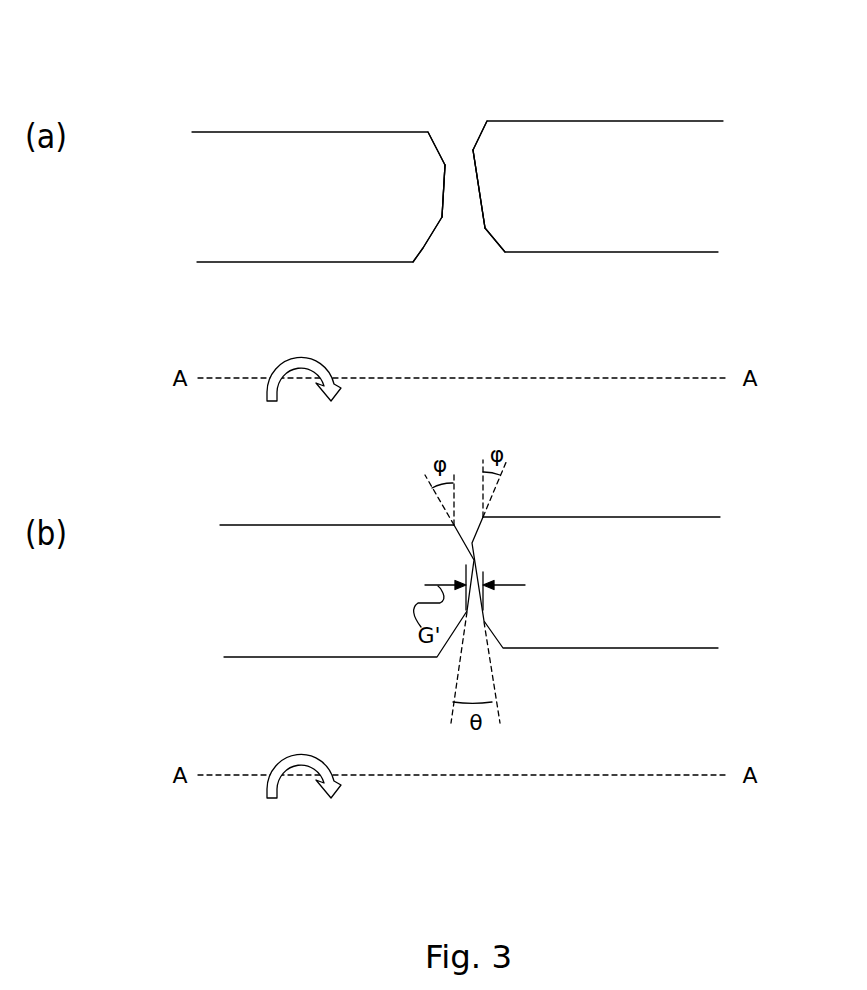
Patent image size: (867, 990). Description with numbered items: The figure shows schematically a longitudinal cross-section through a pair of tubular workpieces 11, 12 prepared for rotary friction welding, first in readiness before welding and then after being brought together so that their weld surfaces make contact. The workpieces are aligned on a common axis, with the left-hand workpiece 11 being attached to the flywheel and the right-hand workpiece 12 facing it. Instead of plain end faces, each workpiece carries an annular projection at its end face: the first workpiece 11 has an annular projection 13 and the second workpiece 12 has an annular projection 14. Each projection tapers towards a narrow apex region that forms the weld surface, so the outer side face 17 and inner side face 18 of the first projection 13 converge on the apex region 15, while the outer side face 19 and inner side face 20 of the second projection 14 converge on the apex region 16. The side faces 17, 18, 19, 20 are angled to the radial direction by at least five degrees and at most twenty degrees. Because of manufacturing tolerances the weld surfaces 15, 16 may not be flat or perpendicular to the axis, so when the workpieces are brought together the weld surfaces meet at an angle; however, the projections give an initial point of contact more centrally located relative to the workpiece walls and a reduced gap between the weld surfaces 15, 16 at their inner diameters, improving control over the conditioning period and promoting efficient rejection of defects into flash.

The tubular workpiece 11 is at (297, 211).
The tubular workpiece 12 is at (617, 199).
The annular projection 13 is at (435, 190).
The annular projection 14 is at (483, 188).
The apex region 15 is at (444, 196).
The apex region 16 is at (481, 203).
The outer side face 17 is at (437, 145).
The inner side face 18 is at (424, 248).
The outer side face 19 is at (480, 127).
The inner side face 20 is at (493, 241).